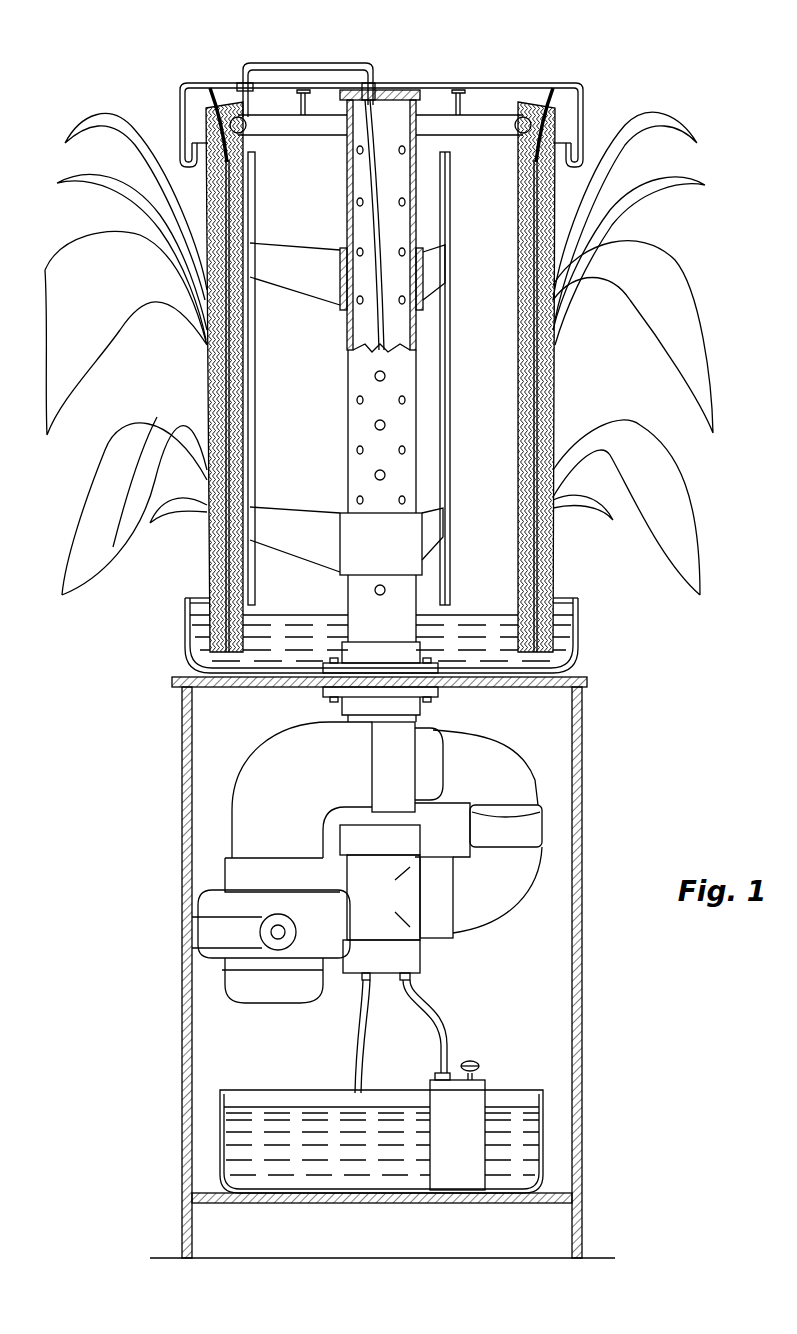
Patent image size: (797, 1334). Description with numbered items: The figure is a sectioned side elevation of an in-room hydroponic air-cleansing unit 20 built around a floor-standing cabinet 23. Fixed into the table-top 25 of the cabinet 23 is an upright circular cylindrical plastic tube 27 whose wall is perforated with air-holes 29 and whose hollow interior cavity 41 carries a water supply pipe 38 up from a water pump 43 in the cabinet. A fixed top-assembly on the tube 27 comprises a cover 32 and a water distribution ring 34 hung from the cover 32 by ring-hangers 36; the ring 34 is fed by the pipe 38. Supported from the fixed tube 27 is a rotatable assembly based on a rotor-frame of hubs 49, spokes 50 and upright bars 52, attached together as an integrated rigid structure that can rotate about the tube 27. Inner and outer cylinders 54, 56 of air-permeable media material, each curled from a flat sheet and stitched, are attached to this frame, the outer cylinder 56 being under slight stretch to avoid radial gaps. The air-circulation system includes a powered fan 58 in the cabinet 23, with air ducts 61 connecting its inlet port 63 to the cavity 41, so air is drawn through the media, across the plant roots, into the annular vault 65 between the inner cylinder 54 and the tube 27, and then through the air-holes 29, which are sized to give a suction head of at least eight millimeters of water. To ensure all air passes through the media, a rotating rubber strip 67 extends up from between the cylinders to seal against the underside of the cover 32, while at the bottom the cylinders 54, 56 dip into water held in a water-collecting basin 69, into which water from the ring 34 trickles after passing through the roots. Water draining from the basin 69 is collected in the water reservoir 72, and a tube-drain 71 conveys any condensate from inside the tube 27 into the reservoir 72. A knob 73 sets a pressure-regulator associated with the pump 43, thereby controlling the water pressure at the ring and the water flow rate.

The unit 20 is at (633, 1073).
The cabinet 23 is at (582, 971).
The table-top 25 is at (587, 683).
The tube 27 is at (353, 425).
The air-holes 29 is at (378, 475).
The cover 32 is at (583, 103).
The water distribution ring 34 is at (522, 115).
The ring-hangers 36 is at (460, 107).
The water supply pipe 38 is at (308, 67).
The interior cavity 41 is at (397, 125).
The water pump 43 is at (443, 1146).
The hubs 49 is at (340, 252).
The spokes 50 is at (305, 285).
The upright bars 52 is at (250, 185).
The inner cylinder 54 is at (243, 583).
The outer cylinder 56 is at (210, 577).
The fan 58 is at (245, 957).
The air ducts 61 is at (258, 803).
The inlet port 63 is at (252, 870).
The vault 65 is at (470, 392).
The rubber strip 67 is at (227, 97).
The water-collecting basin 69 is at (562, 632).
The tube-drain 71 is at (362, 1043).
The water reservoir 72 is at (228, 1152).
The knob 73 is at (477, 1063).